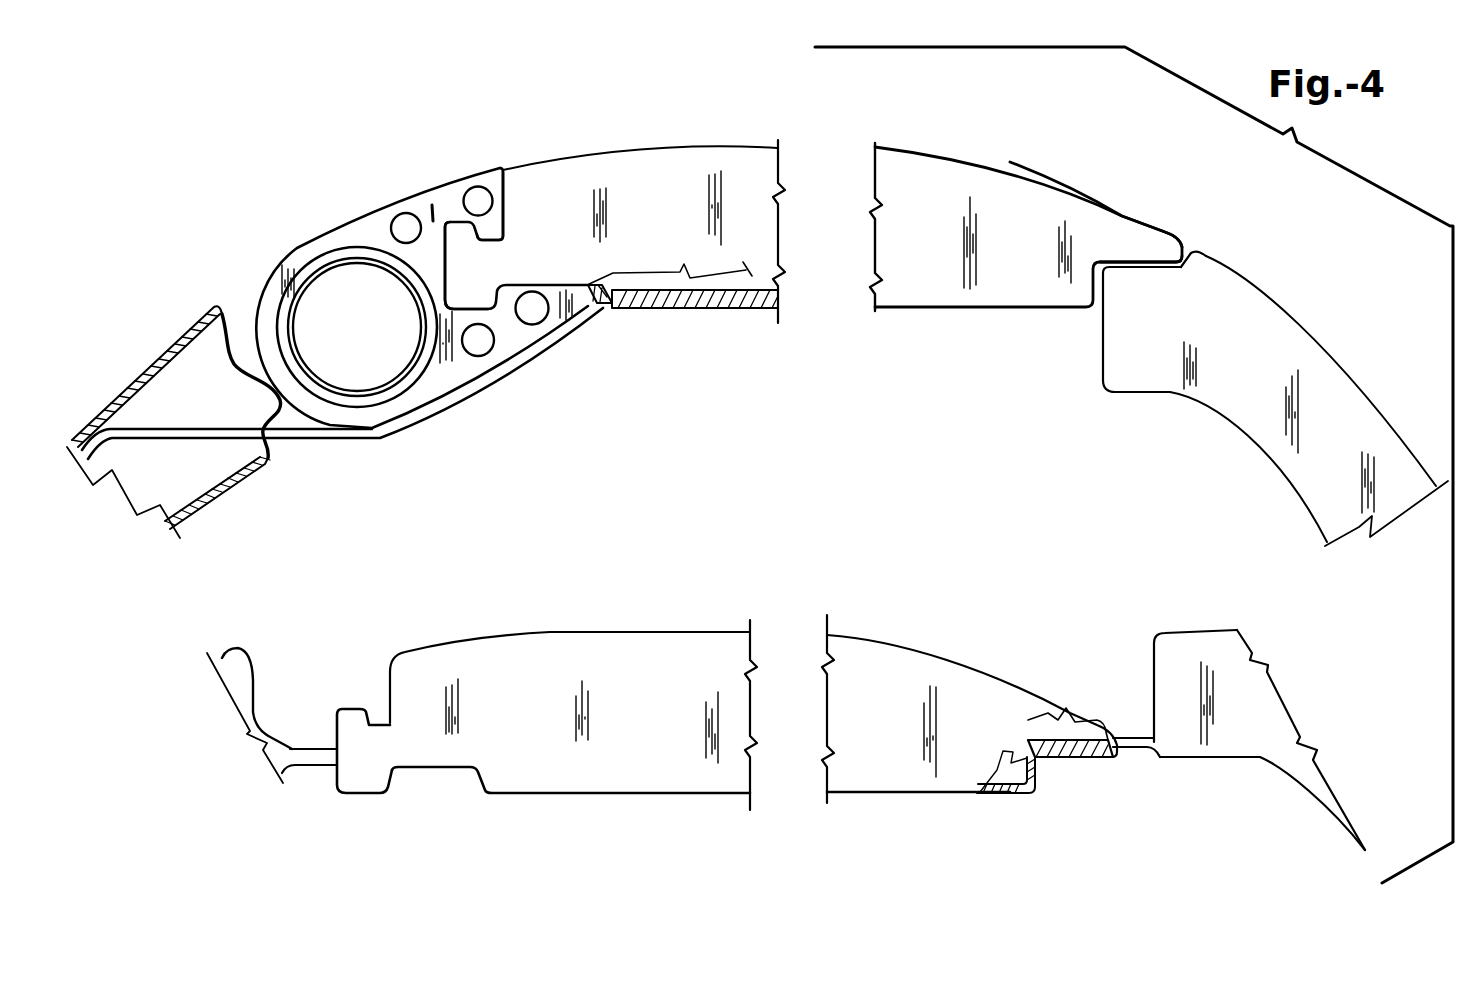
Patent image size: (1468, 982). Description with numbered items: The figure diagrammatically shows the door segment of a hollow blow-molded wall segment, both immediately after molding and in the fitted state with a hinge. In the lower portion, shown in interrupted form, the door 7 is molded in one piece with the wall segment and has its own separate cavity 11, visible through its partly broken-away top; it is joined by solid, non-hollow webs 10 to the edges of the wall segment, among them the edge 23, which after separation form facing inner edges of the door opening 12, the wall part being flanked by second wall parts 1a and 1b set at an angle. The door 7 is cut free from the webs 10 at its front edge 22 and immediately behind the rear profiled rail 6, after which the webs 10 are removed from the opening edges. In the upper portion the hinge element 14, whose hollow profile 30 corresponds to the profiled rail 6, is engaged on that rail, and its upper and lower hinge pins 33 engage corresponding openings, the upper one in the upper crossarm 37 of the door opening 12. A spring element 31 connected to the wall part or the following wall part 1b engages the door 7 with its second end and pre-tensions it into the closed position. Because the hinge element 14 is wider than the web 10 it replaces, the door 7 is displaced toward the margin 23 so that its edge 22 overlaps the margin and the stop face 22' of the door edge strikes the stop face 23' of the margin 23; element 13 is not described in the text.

The second wall part 1a is at (1271, 321).
The second wall part 1b is at (158, 357).
The profiled rail 6 is at (460, 238).
The door 7 is at (679, 165).
The web 10 is at (308, 758).
The cavity 11 is at (690, 284).
The door opening 12 is at (972, 366).
The hook 13 is at (343, 673).
The hinge element 14 is at (336, 229).
The front edge 22 is at (1011, 469).
The stop face 22' is at (1105, 491).
The edge 23 is at (1108, 341).
The stop face 23' is at (1195, 497).
The hollow profile 30 is at (480, 226).
The spring element 31 is at (207, 430).
The hinge pin 33 is at (353, 406).
The upper crossarm 37 is at (264, 464).